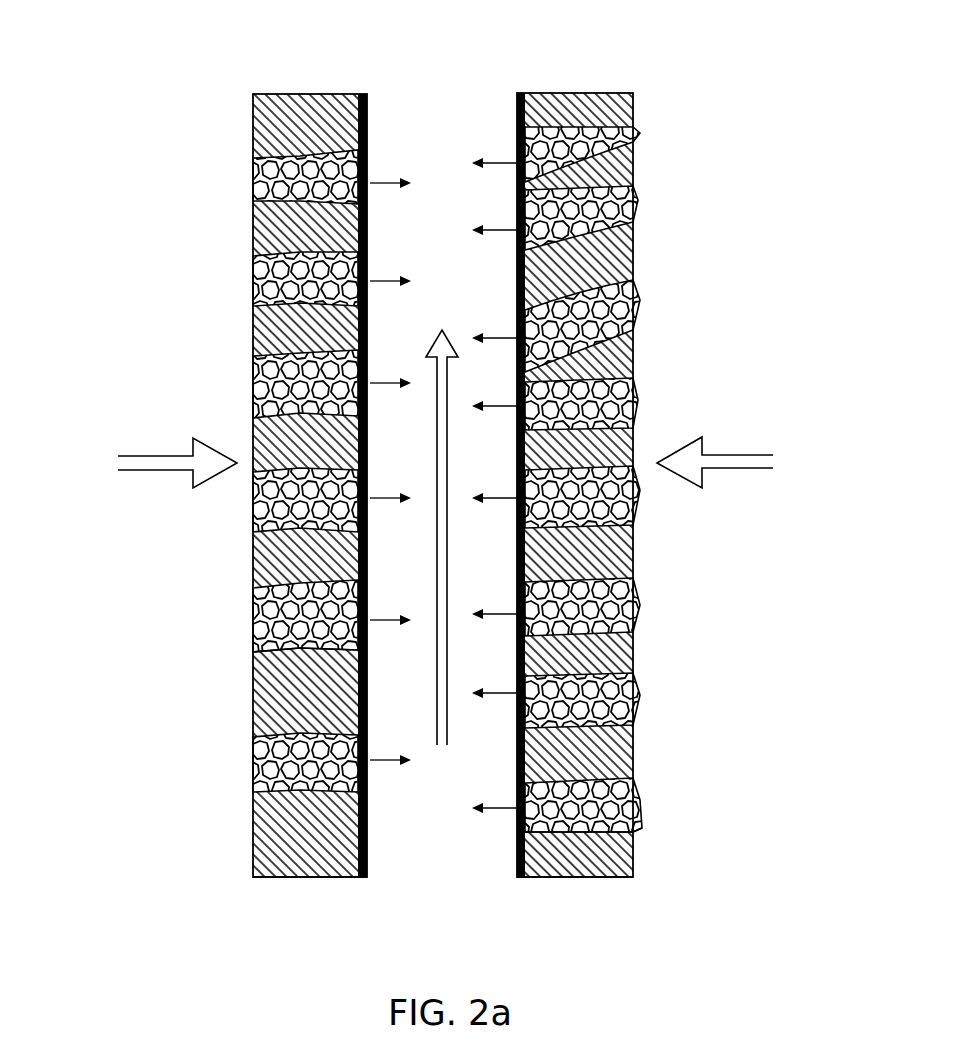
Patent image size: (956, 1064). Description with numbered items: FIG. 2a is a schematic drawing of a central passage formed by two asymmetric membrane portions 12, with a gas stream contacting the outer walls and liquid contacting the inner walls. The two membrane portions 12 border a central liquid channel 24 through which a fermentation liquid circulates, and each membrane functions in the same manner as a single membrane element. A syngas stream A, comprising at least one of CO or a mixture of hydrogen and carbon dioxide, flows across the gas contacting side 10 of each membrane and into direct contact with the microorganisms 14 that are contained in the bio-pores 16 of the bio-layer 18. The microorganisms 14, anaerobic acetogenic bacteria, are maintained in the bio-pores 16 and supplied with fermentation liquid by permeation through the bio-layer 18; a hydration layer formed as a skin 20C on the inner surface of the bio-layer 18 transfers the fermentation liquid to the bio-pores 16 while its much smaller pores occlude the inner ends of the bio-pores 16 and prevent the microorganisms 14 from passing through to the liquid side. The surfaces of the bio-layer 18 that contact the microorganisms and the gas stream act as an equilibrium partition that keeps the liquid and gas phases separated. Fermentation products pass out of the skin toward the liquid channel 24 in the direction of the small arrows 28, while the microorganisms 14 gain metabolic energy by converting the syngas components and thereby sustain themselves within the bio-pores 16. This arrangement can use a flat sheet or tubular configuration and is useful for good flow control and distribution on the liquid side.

The gas contacting side 10 is at (253, 562).
The asymmetric membrane 12 is at (314, 55).
The microorganisms 14 is at (262, 626).
The bio-pores 16 is at (268, 654).
The bio-layer 18 is at (302, 878).
The membrane layer 20C is at (370, 818).
The central liquid channel 24 is at (447, 862).
The gas permeation arrows 28 is at (384, 501).
The syngas stream A is at (146, 471).